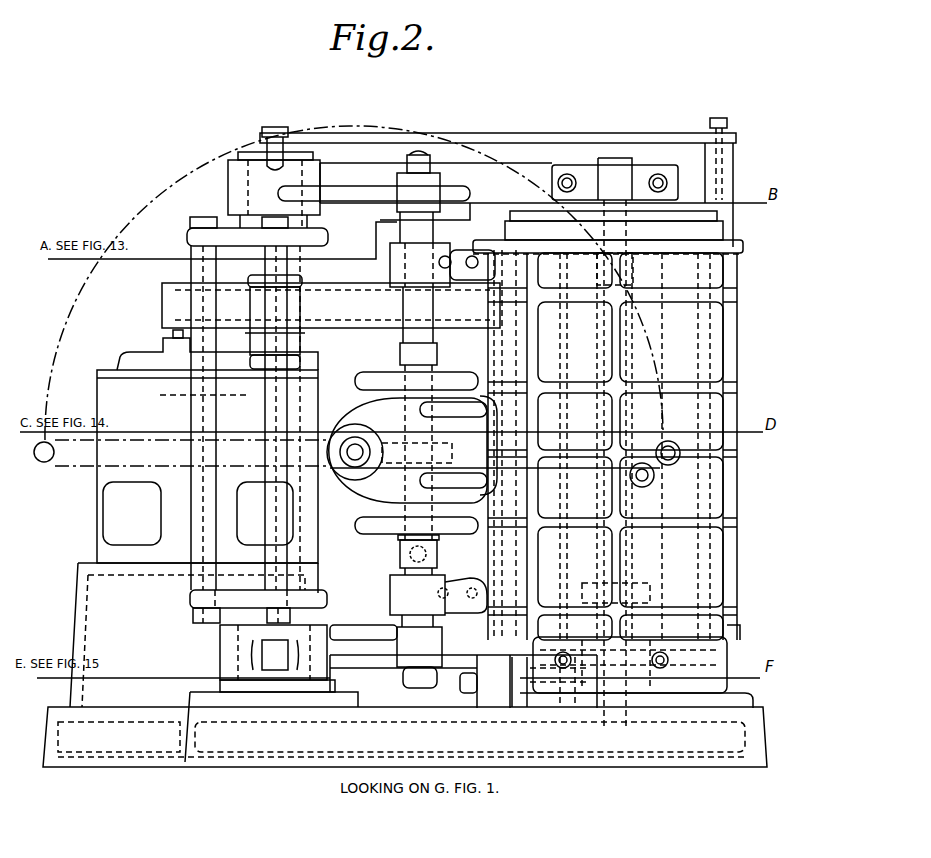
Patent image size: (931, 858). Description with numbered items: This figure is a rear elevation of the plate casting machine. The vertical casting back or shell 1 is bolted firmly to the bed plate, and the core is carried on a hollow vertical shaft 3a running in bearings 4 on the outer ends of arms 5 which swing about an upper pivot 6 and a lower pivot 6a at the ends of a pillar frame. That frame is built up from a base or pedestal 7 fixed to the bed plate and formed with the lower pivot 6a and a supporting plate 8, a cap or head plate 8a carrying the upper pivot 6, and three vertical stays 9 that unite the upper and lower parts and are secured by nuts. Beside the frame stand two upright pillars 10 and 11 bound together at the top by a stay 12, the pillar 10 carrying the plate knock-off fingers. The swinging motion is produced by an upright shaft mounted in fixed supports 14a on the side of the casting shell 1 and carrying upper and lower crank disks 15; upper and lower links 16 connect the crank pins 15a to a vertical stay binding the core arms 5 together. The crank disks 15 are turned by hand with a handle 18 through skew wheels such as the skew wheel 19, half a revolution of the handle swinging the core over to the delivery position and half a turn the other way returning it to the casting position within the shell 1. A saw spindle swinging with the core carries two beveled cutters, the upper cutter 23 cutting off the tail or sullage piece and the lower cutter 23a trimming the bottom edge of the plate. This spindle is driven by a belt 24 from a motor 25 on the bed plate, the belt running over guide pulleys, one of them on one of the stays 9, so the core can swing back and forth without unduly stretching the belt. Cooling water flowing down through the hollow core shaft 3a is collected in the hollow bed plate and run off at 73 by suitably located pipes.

The casting back or shell 1 is at (743, 246).
The hollow vertical shaft 3a is at (632, 168).
The bearings 4 is at (665, 170).
The arms 5 is at (360, 672).
The upper pivot 6 is at (235, 172).
The lower pivot 6a is at (222, 655).
The base or pedestal 7 is at (195, 697).
The supporting plate 8 is at (195, 598).
The cap or head plate 8a is at (190, 236).
The vertical stays 9 is at (262, 262).
The upright pillar 10 is at (733, 187).
The upright pillar 11 is at (415, 152).
The stay 12 is at (548, 127).
The fixed supports 14a is at (463, 405).
The crank disks 15 is at (356, 526).
The crank pins 15a is at (395, 372).
The links 16 is at (400, 352).
The handle 18 is at (668, 446).
The skew wheel 19 is at (352, 470).
The cutter 23 is at (487, 340).
The cutter 23a is at (482, 620).
The belt 24 is at (369, 290).
The motor 25 is at (194, 518).
The bed plate outlet 73 is at (470, 737).